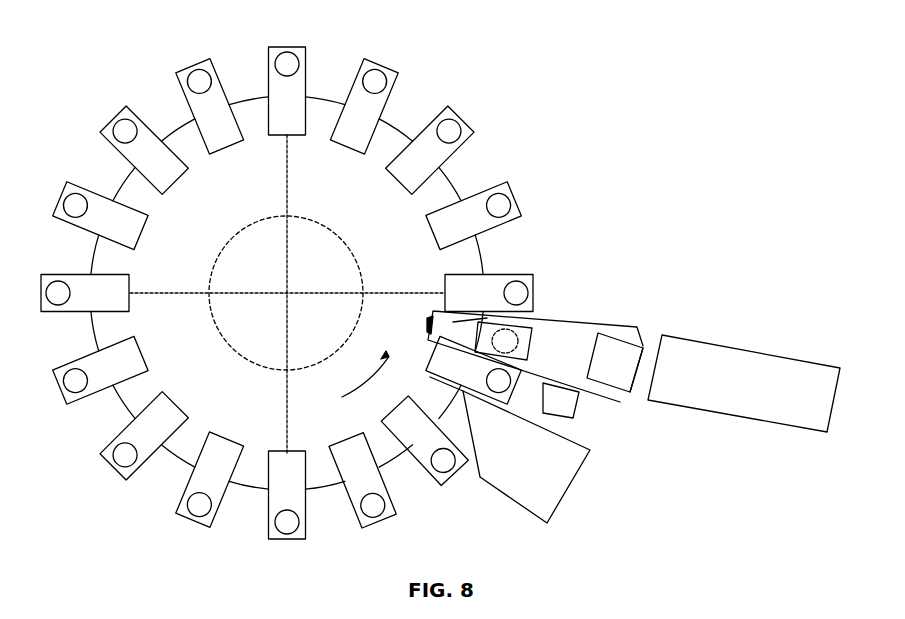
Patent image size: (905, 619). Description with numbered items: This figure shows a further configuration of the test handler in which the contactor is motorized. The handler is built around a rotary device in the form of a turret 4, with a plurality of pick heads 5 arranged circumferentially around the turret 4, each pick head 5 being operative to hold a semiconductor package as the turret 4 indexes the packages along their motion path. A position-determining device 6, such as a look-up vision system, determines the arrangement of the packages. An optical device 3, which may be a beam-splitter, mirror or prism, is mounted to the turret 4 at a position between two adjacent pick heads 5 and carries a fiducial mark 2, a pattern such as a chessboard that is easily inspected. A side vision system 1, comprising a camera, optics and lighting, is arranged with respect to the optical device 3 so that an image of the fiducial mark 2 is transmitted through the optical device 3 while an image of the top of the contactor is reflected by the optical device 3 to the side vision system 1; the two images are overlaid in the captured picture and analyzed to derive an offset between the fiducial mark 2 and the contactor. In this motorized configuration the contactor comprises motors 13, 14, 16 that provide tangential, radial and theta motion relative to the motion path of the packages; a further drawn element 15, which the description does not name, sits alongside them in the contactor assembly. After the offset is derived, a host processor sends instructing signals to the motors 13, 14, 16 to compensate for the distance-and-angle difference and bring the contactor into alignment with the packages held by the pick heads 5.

The side vision system 1 is at (744, 383).
The fiducial mark 2 is at (434, 323).
The optical device 3 is at (513, 340).
The turret 4 is at (446, 190).
The pick head 5 is at (380, 74).
The position-determining device 6 is at (510, 450).
The motor 13 is at (560, 400).
The motor 14 is at (623, 368).
The block 15 is at (602, 362).
The motor 16 is at (470, 340).